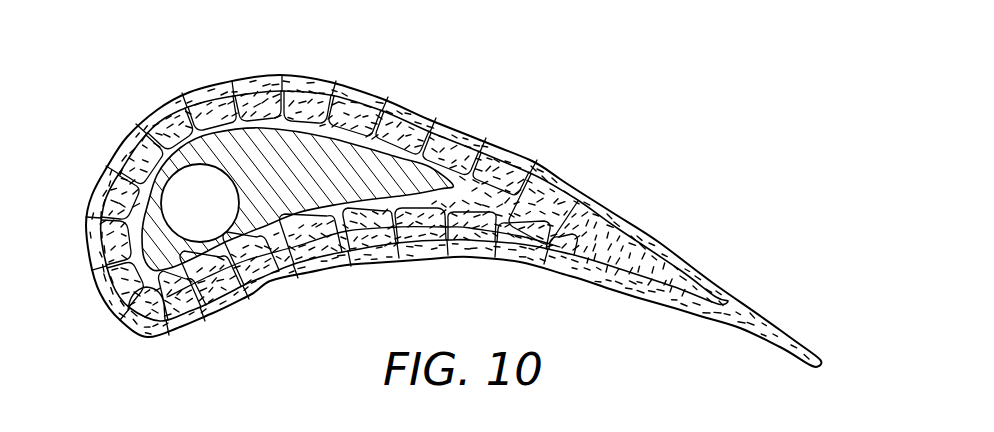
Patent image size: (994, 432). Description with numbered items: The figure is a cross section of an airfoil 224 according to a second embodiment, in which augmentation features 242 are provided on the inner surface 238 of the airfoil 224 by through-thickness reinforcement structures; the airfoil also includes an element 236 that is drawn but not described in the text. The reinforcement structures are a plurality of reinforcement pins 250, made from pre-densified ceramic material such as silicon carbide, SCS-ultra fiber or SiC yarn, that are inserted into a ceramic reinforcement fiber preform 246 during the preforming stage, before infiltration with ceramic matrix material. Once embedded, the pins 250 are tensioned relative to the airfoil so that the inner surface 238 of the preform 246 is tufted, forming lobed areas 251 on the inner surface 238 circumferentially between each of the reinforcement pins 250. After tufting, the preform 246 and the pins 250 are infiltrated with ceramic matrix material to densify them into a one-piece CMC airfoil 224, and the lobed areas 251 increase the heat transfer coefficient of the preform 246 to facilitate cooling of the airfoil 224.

The airfoil 224 is at (584, 149).
The inner ply cells 236 is at (191, 126).
The inner surface 238 is at (124, 143).
The augmentation features 242 is at (170, 314).
The ceramic reinforcement fiber preform 246 is at (666, 220).
The reinforcement pins 250 is at (263, 283).
The lobed areas 251 is at (374, 217).